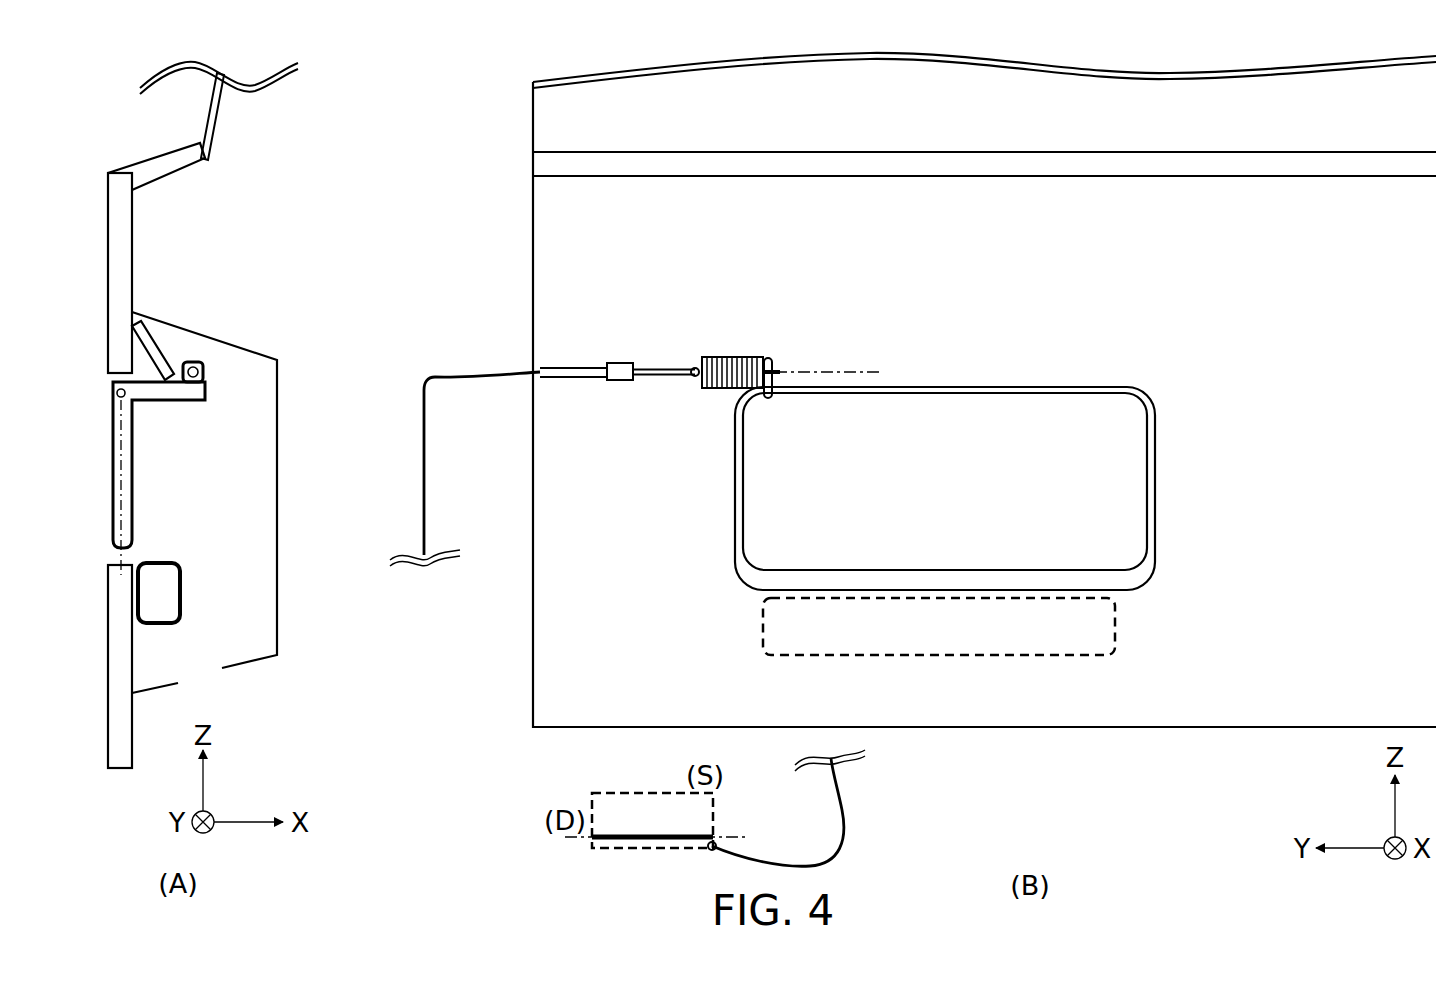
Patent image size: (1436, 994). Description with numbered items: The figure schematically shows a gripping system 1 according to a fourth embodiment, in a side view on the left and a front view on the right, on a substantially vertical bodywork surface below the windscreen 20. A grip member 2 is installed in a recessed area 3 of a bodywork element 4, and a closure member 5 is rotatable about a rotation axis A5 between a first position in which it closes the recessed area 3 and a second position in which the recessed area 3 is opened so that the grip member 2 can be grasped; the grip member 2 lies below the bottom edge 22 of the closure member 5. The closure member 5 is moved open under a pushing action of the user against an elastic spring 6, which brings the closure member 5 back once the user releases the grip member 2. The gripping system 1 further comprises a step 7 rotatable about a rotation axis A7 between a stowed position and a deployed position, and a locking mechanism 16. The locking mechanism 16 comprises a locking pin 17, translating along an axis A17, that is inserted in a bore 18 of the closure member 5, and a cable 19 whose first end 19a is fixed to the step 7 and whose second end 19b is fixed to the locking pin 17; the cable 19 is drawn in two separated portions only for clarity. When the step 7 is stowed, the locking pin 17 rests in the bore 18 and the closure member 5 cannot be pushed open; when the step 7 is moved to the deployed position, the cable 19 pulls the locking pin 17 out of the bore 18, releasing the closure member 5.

The gripping system 1 is at (290, 286).
The grip member 2 is at (155, 605).
The recessed area 3 is at (240, 556).
The bodywork element 4 is at (122, 657).
The closure member 5 is at (122, 480).
The elastic spring 6 is at (150, 343).
The step 7 is at (652, 822).
The locking mechanism 16 is at (690, 346).
The locking pin 17 is at (205, 362).
The bore 18 is at (205, 377).
The cable 19 is at (595, 370).
The first end 19a is at (710, 850).
The second end 19b is at (695, 372).
The windscreen 20 is at (222, 112).
The bottom edge 22 is at (126, 553).
The rotation axis A5 is at (130, 394).
The rotation axis A7 is at (723, 835).
The axis A17 is at (853, 370).